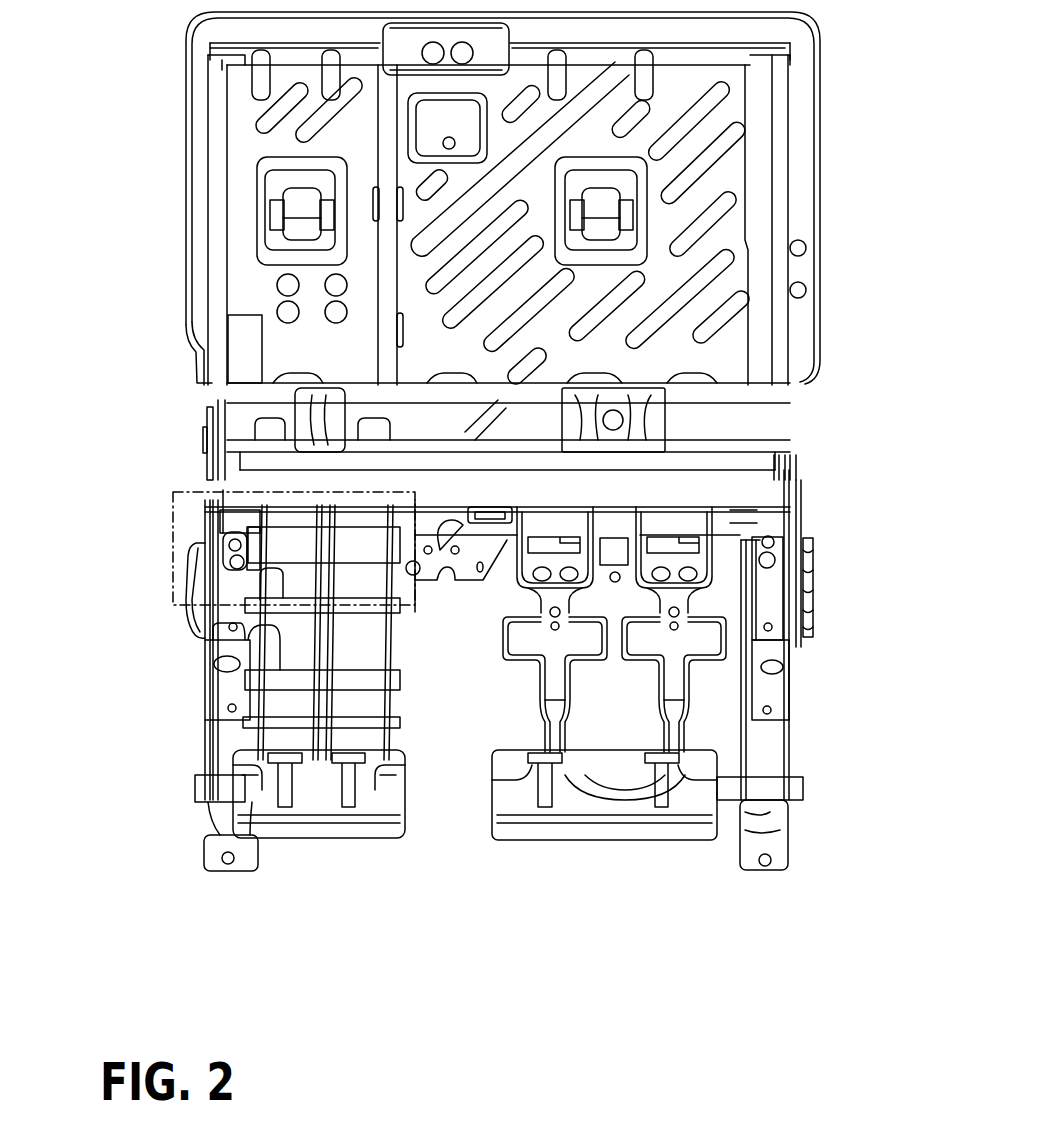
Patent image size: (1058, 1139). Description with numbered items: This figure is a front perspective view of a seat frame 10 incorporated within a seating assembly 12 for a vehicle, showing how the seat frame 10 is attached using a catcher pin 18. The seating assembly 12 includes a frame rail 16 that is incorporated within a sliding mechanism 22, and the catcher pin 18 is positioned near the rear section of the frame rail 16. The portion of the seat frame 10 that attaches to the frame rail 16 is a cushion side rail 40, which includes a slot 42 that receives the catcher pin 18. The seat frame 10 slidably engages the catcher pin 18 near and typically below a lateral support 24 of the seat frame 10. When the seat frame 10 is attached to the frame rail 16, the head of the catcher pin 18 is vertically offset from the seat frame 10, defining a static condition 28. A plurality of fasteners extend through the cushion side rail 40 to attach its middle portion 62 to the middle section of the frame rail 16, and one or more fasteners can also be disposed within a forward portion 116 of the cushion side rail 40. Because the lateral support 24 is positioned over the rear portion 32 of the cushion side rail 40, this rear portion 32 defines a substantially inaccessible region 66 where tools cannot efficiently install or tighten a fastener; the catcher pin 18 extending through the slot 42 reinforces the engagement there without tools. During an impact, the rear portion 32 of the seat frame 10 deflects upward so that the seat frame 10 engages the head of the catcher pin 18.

The seat frame 10 is at (158, 389).
The seating assembly 12 is at (828, 146).
The frame rail 16 is at (255, 650).
The catcher pin 18 is at (228, 548).
The sliding mechanism 22 is at (196, 757).
The lateral support 24 is at (233, 523).
The static condition 28 is at (186, 622).
The rear portion 32 is at (773, 580).
The cushion side rail 40 is at (758, 610).
The slot 42 is at (780, 572).
The middle portion 62 is at (762, 688).
The substantially inaccessible region 66 is at (745, 550).
The forward portion 116 is at (770, 810).